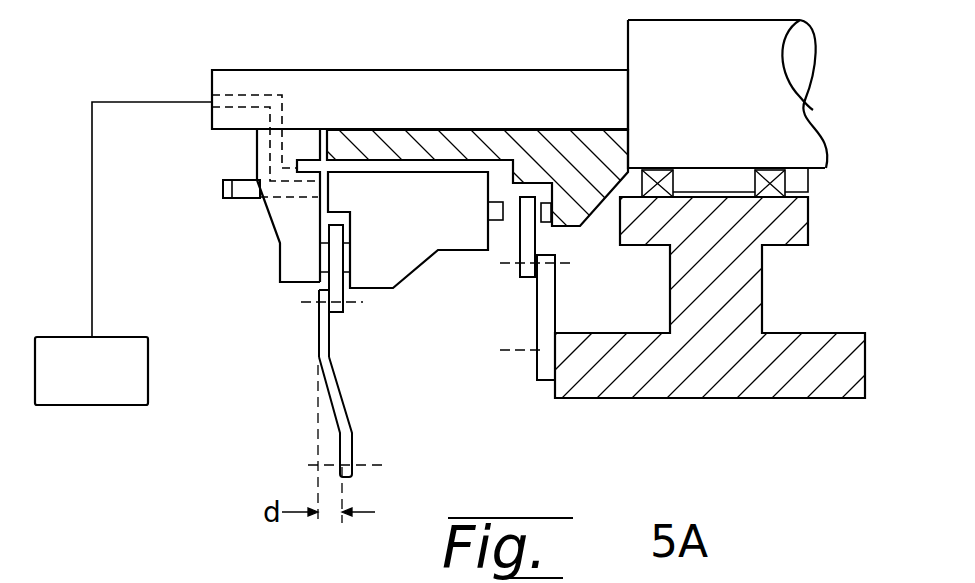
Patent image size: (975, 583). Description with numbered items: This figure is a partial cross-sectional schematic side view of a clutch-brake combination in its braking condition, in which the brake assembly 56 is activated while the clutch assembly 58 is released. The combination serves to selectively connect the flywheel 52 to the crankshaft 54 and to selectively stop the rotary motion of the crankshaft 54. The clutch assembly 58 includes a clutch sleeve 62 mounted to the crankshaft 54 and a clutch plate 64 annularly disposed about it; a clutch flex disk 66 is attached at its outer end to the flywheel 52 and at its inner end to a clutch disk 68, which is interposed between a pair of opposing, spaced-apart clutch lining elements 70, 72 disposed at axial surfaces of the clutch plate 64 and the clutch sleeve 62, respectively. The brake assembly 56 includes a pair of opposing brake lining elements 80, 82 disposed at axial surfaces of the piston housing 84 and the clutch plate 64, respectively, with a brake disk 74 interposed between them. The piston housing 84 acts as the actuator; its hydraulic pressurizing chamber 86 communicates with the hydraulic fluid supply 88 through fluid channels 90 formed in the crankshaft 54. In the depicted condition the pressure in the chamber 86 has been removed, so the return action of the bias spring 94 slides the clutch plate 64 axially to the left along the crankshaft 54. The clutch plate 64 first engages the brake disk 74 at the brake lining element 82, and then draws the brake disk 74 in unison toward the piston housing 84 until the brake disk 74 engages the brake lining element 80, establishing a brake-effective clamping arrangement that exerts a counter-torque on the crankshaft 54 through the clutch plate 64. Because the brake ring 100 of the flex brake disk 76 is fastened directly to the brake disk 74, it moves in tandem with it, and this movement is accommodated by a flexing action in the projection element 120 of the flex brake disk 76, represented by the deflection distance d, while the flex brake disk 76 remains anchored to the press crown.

The flywheel 52 is at (803, 347).
The crankshaft 54 is at (445, 114).
The brake assembly 56 is at (239, 411).
The clutch assembly 58 is at (488, 404).
The clutch sleeve 62 is at (567, 143).
The clutch plate 64 is at (438, 217).
The clutch flex disk 66 is at (537, 380).
The clutch disk 68 is at (527, 277).
The clutch lining element 70 is at (503, 222).
The clutch lining element 72 is at (546, 225).
The brake disk 74 is at (346, 300).
The flex brake disk 76 is at (322, 321).
The brake lining element 80 is at (321, 257).
The brake lining element 82 is at (350, 260).
The piston housing 84 is at (287, 218).
The hydraulic pressurizing chamber 86 is at (307, 158).
The hydraulic fluid supply 88 is at (65, 338).
The fluid channels 90 is at (245, 97).
The bias spring 94 is at (223, 187).
The brake ring 100 is at (336, 346).
The projection element 120 is at (340, 410).